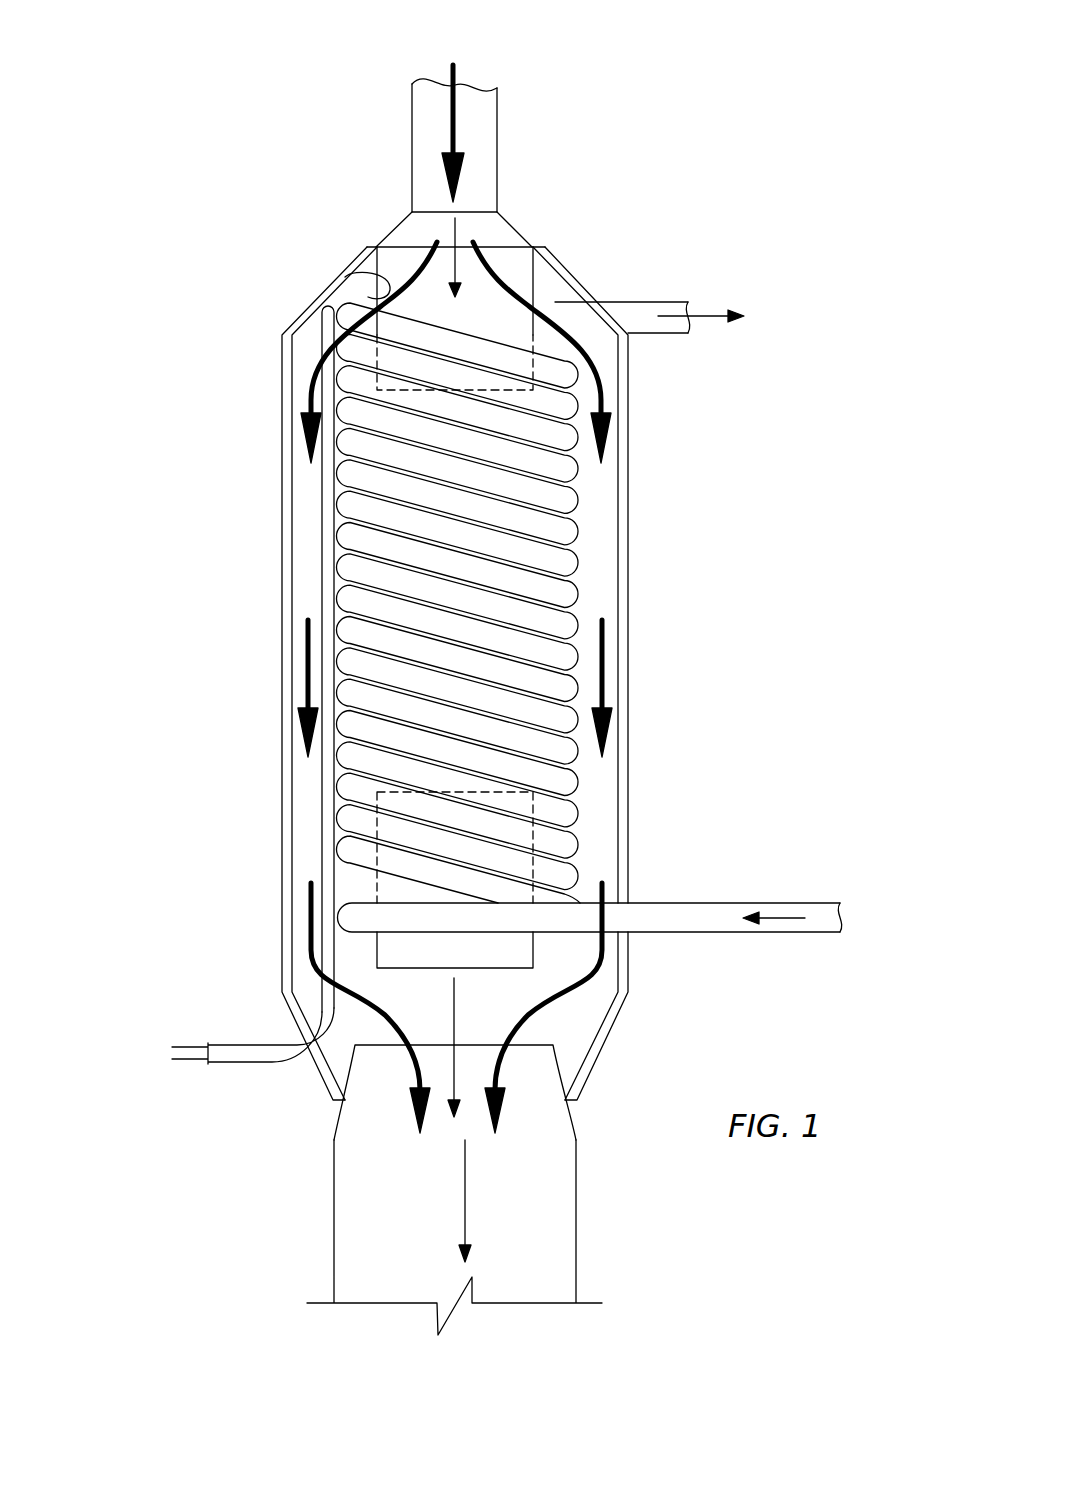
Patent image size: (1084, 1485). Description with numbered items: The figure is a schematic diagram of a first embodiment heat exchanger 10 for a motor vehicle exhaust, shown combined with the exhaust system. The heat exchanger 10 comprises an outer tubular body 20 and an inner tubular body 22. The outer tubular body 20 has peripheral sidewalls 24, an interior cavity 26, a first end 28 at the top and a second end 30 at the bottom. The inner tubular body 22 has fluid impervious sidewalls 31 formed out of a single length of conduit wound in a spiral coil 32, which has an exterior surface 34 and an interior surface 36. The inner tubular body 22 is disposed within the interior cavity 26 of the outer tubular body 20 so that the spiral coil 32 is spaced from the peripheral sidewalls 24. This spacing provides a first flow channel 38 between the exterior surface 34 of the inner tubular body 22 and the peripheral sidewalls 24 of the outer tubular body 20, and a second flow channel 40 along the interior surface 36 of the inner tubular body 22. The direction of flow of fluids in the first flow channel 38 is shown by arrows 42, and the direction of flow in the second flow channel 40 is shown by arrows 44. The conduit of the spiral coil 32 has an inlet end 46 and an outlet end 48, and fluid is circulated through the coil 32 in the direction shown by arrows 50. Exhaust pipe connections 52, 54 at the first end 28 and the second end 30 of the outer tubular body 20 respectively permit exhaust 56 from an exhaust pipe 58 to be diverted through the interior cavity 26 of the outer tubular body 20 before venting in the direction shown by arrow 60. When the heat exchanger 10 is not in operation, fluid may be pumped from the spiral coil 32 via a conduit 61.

The heat exchanger 10 is at (320, 176).
The outer tubular body 20 is at (655, 613).
The inner tubular body 22 is at (590, 760).
The peripheral sidewalls 24 is at (622, 483).
The interior cavity 26 is at (468, 1028).
The first end 28 is at (313, 249).
The second end 30 is at (262, 993).
The fluid impervious sidewalls 31 is at (575, 572).
The spiral coil 32 is at (548, 772).
The exterior surface 34 is at (580, 866).
The interior surface 36 is at (345, 277).
The first flow channel 38 is at (590, 525).
The second flow channel 40 is at (483, 979).
The arrows 42 is at (304, 683).
The arrows 44 is at (463, 232).
The inlet end 46 is at (690, 905).
The outlet end 48 is at (625, 302).
The arrows 50 is at (696, 312).
The exhaust pipe connection 52 is at (508, 220).
The exhaust pipe connection 54 is at (577, 1200).
The exhaust 56 is at (447, 125).
The exhaust pipe 58 is at (497, 113).
The arrow 60 is at (465, 1185).
The conduit 61 is at (323, 822).